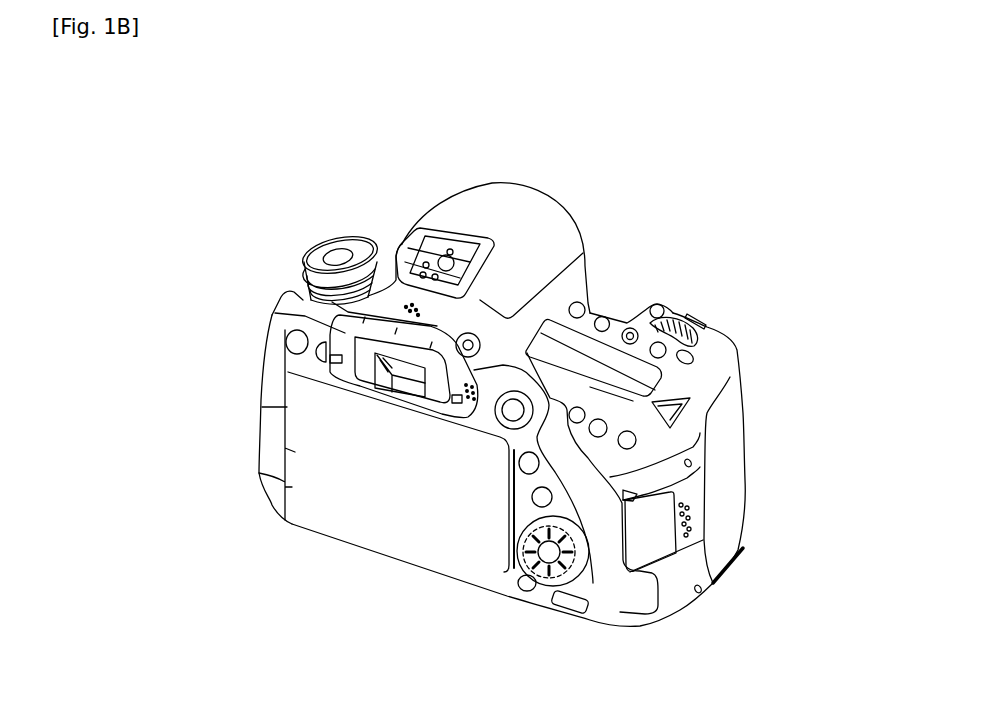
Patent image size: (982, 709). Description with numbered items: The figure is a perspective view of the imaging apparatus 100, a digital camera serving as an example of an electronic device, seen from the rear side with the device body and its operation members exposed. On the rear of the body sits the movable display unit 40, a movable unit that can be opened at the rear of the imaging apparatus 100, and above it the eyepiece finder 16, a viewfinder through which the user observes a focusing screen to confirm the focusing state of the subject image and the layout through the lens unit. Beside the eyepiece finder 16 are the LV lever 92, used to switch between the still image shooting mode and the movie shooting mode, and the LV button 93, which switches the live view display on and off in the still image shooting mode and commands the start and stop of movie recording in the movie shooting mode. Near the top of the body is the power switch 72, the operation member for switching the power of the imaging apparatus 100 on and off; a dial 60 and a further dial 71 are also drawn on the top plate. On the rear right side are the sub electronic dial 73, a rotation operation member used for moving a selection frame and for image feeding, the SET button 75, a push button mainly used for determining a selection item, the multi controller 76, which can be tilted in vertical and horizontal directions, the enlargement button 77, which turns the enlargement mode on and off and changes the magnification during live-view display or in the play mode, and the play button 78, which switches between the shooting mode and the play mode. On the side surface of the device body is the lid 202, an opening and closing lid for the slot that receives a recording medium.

The imaging apparatus 100 is at (570, 168).
The mode dial 60 is at (317, 253).
The power switch 72 is at (276, 308).
The eyepiece finder 16 is at (356, 380).
The movable display unit 40 is at (320, 518).
The LV lever 92 is at (510, 393).
The LV button 93 is at (517, 412).
The main electronic dial 71 is at (673, 315).
The enlargement button 77 is at (636, 441).
The lid 202 is at (661, 546).
The play button 78 is at (530, 504).
The multi controller 76 is at (532, 590).
The sub electronic dial 73 is at (547, 587).
The SET button 75 is at (570, 567).